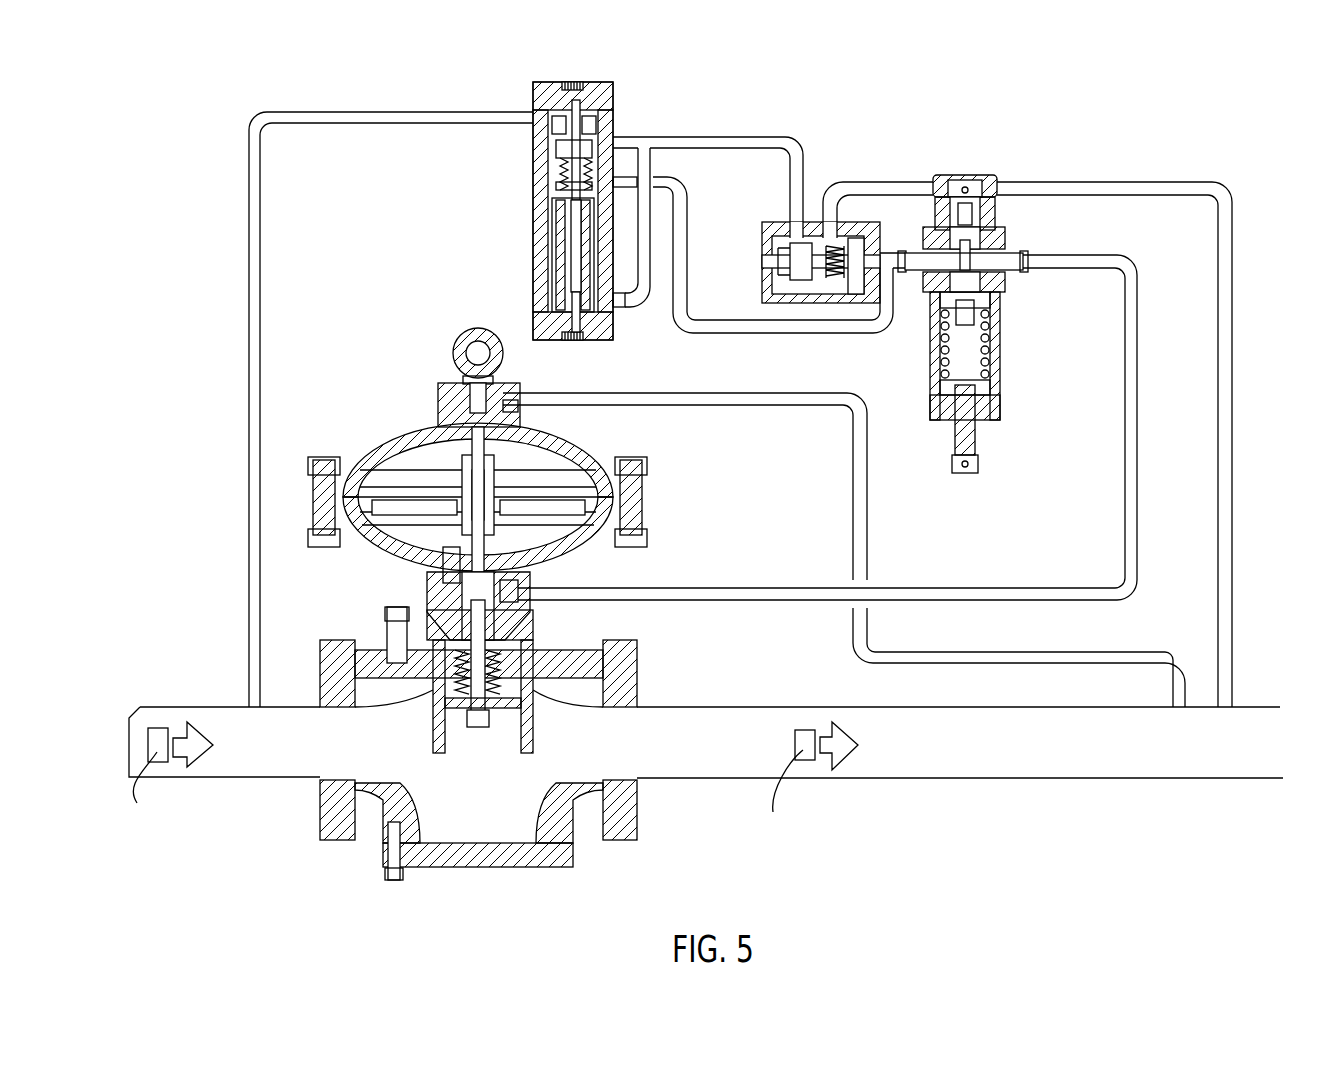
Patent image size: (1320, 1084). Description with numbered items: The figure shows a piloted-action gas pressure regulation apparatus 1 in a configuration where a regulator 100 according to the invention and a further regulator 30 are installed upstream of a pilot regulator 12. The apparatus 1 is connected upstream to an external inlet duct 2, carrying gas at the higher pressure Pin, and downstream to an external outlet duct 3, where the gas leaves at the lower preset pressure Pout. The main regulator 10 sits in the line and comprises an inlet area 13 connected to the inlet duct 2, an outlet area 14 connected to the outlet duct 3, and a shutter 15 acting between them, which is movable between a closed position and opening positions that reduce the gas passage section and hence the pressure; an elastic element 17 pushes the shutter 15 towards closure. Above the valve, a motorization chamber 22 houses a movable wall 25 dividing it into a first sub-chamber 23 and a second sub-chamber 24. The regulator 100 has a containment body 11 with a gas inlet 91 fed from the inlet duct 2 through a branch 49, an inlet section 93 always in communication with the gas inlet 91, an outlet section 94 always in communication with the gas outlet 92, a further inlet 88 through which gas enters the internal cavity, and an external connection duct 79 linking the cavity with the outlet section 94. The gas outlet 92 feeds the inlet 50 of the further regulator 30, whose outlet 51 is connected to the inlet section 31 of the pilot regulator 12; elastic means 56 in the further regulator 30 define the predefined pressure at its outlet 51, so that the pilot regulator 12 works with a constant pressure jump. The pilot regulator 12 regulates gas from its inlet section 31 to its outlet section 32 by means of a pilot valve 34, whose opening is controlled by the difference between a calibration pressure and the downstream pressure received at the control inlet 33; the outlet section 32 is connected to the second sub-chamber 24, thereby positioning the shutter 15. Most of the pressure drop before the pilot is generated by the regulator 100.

The apparatus 1 is at (208, 243).
The inlet duct 2 is at (217, 767).
The outlet duct 3 is at (930, 757).
The main regulator 10 is at (475, 762).
The containment body 11 is at (533, 203).
The pilot regulator 12 is at (993, 294).
The inlet area 13 is at (478, 820).
The outlet area 14 is at (537, 707).
The shutter 15 is at (437, 707).
The elastic element 17 is at (523, 632).
The motorization chamber 22 is at (473, 484).
The first sub-chamber 23 is at (547, 465).
The second sub-chamber 24 is at (553, 535).
The movable wall 25 is at (411, 512).
The further regulator 30 is at (826, 258).
The inlet section 31 is at (912, 277).
The outlet section 32 is at (1036, 265).
The control inlet 33 is at (970, 182).
The pilot valve 34 is at (982, 252).
The branch 49 is at (254, 335).
The inlet 50 is at (800, 228).
The outlet 51 is at (884, 262).
The elastic means 56 is at (833, 275).
The connection duct 79 is at (645, 290).
The further inlet 88 is at (620, 182).
The gas inlet 91 is at (551, 100).
The gas outlet 92 is at (642, 138).
The inlet section 93 is at (550, 134).
The outlet section 94 is at (538, 281).
The regulator 100 is at (553, 192).